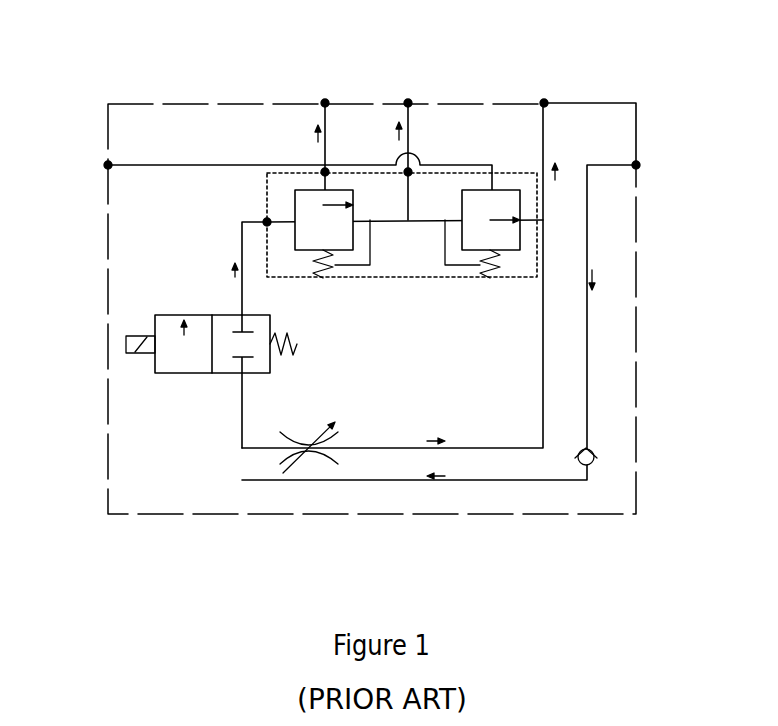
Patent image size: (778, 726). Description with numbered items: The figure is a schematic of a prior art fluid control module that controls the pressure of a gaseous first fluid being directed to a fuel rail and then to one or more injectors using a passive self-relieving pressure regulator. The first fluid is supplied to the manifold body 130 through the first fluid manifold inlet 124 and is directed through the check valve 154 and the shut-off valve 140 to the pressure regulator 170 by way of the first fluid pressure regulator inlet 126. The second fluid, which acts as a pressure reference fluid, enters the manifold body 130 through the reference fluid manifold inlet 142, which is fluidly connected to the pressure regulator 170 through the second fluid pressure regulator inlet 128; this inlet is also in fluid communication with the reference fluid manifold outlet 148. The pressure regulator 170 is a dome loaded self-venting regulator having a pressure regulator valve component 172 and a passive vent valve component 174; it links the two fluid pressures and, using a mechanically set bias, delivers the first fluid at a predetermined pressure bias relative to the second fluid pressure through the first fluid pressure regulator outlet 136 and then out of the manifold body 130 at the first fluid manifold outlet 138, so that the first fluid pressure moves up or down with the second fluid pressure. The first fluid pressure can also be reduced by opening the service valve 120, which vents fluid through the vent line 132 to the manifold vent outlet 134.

The service valve 120 is at (310, 448).
The first fluid manifold inlet 124 is at (636, 165).
The first fluid pressure regulator inlet 126 is at (265, 222).
The second fluid pressure regulator inlet 128 is at (325, 172).
The manifold body 130 is at (680, 298).
The vent line 132 is at (545, 377).
The manifold vent outlet 134 is at (544, 103).
The first fluid pressure regulator outlet 136 is at (408, 172).
The first fluid manifold outlet 138 is at (408, 103).
The shut-off valve 140 is at (167, 375).
The reference fluid manifold inlet 142 is at (108, 165).
The reference fluid manifold outlet 148 is at (325, 103).
The check valve 154 is at (586, 452).
The pressure regulator 170 is at (265, 187).
The pressure regulator valve component 172 is at (268, 210).
The passive vent valve component 174 is at (520, 237).